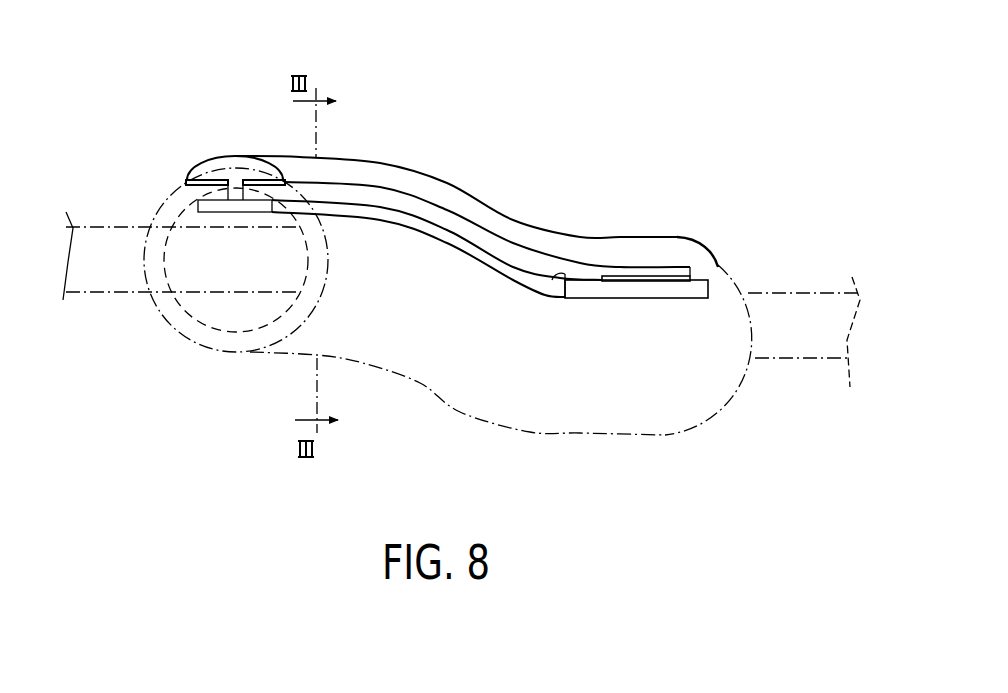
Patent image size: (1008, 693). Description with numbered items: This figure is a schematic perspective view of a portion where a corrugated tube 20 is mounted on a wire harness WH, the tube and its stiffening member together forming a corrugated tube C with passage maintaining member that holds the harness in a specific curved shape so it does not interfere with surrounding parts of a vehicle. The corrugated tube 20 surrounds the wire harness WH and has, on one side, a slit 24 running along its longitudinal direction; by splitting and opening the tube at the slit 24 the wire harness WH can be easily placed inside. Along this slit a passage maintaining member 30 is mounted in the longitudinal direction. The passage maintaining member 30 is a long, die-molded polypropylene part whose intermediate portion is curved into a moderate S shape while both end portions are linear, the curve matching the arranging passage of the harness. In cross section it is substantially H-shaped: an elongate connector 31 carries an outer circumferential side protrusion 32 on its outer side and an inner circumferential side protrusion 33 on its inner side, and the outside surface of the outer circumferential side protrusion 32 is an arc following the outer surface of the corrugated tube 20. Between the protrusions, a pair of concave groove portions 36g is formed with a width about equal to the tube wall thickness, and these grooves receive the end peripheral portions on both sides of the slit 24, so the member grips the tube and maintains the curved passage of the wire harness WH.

The corrugated tube 20 is at (630, 437).
The slit 24 is at (244, 184).
The passage maintaining member 30 is at (576, 234).
The connector 31 is at (626, 270).
The outer circumferential side protrusion 32 is at (681, 252).
The inner circumferential side protrusion 33 is at (668, 287).
The concave groove portions 36g is at (563, 282).
The wire harness WH is at (93, 217).
The corrugated tube with passage maintaining member C is at (754, 200).